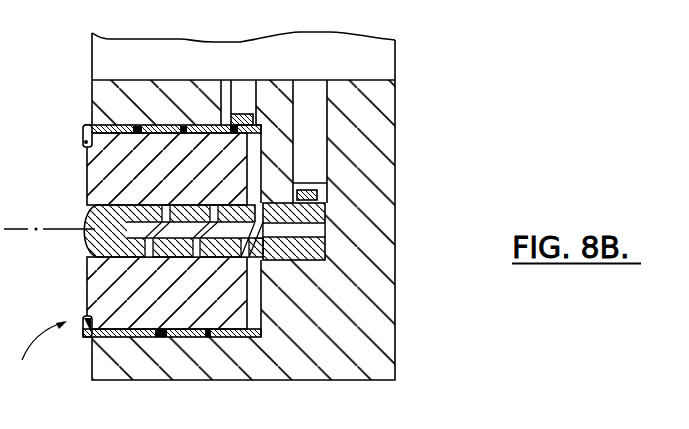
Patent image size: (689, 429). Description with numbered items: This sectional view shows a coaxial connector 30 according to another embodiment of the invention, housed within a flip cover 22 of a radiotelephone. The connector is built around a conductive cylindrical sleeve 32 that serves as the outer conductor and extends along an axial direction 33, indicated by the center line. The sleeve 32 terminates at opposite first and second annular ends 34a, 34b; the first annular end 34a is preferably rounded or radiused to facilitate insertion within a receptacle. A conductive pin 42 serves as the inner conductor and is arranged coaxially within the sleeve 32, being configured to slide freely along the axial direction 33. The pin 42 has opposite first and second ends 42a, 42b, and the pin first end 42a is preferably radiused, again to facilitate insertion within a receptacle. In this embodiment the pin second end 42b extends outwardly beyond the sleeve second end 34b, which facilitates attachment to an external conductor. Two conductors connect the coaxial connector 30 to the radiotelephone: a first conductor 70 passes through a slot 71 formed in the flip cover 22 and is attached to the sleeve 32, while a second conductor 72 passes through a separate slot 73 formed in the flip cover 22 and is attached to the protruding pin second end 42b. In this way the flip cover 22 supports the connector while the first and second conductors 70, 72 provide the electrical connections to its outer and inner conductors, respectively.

The flip cover 22 is at (368, 336).
The coaxial connector 30 is at (37, 358).
The conductive cylindrical sleeve 32 is at (176, 338).
The axial direction 33 is at (49, 257).
The sleeve first annular end 34a is at (87, 338).
The sleeve second annular end 34b is at (258, 338).
The conductive pin 42 is at (240, 297).
The pin first end 42a is at (89, 224).
The pin second end 42b is at (329, 222).
The first conductor 70 is at (243, 113).
The slot 71 is at (225, 96).
The second conductor 72 is at (309, 188).
The slot 73 is at (326, 90).